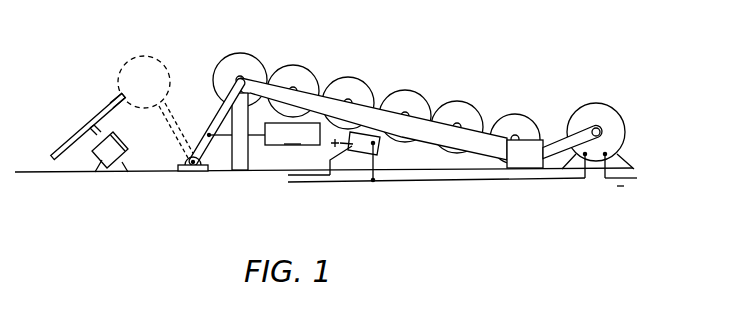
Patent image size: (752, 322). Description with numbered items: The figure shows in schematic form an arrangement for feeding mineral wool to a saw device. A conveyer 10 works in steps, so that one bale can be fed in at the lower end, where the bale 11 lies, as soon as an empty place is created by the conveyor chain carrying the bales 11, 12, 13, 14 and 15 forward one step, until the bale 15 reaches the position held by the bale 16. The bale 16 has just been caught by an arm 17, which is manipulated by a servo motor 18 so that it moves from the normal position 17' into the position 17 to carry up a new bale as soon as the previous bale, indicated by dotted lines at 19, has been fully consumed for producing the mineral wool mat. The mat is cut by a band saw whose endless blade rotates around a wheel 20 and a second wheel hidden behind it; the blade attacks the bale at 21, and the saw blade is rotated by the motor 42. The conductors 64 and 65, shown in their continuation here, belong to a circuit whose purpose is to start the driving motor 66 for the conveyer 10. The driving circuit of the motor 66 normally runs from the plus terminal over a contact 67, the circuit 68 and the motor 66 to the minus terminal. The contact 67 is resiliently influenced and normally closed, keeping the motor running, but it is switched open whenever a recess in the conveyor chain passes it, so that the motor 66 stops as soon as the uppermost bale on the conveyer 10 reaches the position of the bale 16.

The conveyer 10 is at (400, 134).
The bale 11 is at (525, 125).
The bale 12 is at (468, 113).
The bale 13 is at (415, 103).
The bale 14 is at (357, 88).
The bale 15 is at (305, 73).
The bale 16 is at (252, 60).
The arm 17 is at (211, 125).
The normal position of arm 17' is at (169, 133).
The servo motor 18 is at (284, 134).
The bale 19 is at (163, 67).
The wheel 20 is at (68, 136).
The point of attack 21 is at (118, 92).
The motor 42 is at (125, 147).
The conductor 64 is at (323, 187).
The conductor 65 is at (300, 187).
The driving motor 66 is at (587, 105).
The contact 67 is at (355, 157).
The circuit 68 is at (485, 185).